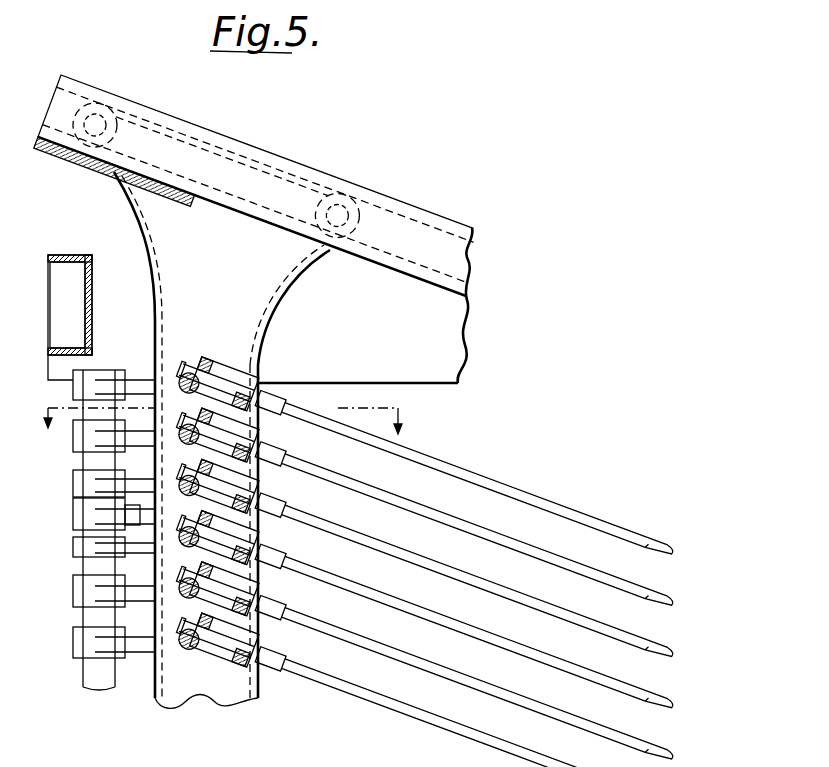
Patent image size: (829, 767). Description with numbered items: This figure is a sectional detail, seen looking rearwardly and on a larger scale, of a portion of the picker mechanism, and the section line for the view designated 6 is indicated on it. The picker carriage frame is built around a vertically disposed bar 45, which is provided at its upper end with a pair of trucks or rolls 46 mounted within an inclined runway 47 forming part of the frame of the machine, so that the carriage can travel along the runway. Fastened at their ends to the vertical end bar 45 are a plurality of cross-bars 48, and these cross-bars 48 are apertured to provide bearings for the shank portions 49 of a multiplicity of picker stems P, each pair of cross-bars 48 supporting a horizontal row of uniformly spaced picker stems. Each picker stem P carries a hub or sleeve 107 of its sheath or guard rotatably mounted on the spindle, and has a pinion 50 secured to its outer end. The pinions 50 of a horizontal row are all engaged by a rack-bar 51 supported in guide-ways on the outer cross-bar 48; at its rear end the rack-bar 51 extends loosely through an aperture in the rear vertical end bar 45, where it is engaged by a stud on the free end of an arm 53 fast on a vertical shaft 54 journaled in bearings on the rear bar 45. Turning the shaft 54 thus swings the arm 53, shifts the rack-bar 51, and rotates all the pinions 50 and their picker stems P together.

The vertically disposed bar 45 is at (260, 318).
The trucks or rolls 46 is at (108, 112).
The inclined runway 47 is at (453, 223).
The cross-bar 48 is at (210, 353).
The shank portion 49 is at (212, 370).
The pinion 50 is at (193, 365).
The rack-bar 51 is at (187, 547).
The arm 53 is at (132, 433).
The vertical shaft 54 is at (90, 686).
The hub or sleeve 107 is at (287, 618).
The picker stem P is at (673, 657).
The section line 6- 6 is at (236, 433).